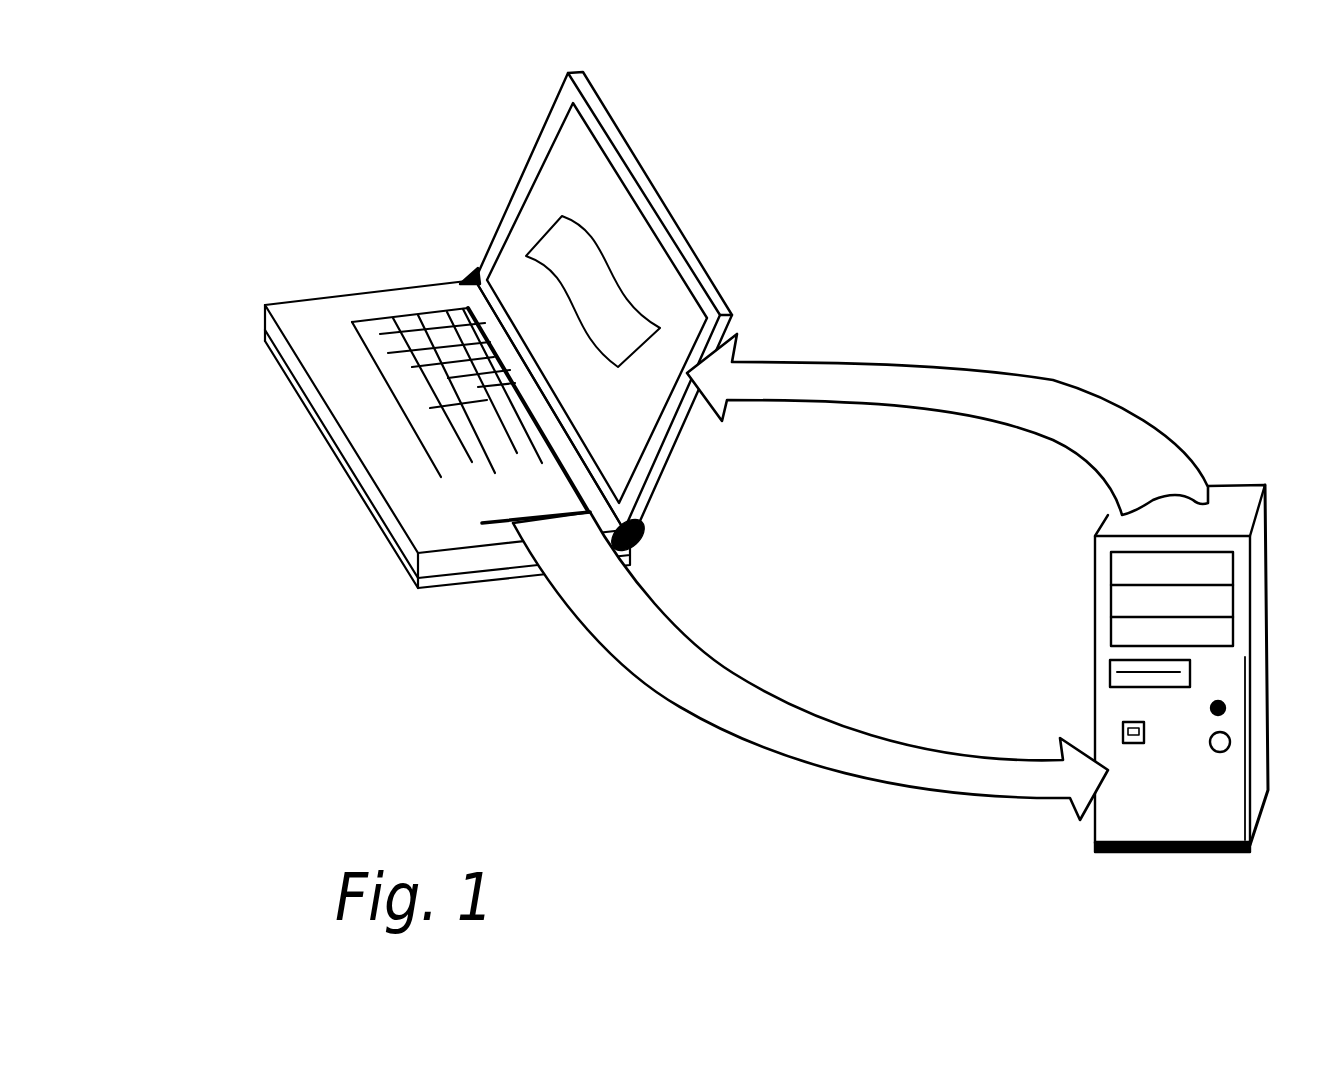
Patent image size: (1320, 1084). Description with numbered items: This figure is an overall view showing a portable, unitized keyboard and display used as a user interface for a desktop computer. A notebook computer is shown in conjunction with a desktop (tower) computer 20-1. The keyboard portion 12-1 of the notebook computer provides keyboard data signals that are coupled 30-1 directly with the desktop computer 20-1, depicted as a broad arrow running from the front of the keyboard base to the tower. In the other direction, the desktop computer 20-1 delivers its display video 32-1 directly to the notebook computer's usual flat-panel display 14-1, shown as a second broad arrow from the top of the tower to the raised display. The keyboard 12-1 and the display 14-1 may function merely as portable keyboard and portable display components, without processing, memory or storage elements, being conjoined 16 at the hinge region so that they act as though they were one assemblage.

The keyboard portion 12-1 is at (402, 368).
The flat-panel display 14-1 is at (427, 142).
The conjoining 16 is at (645, 533).
The desktop (tower) computer 20-1 is at (963, 627).
The keyboard data signals coupling 30-1 is at (681, 705).
The display video 32-1 is at (1053, 382).